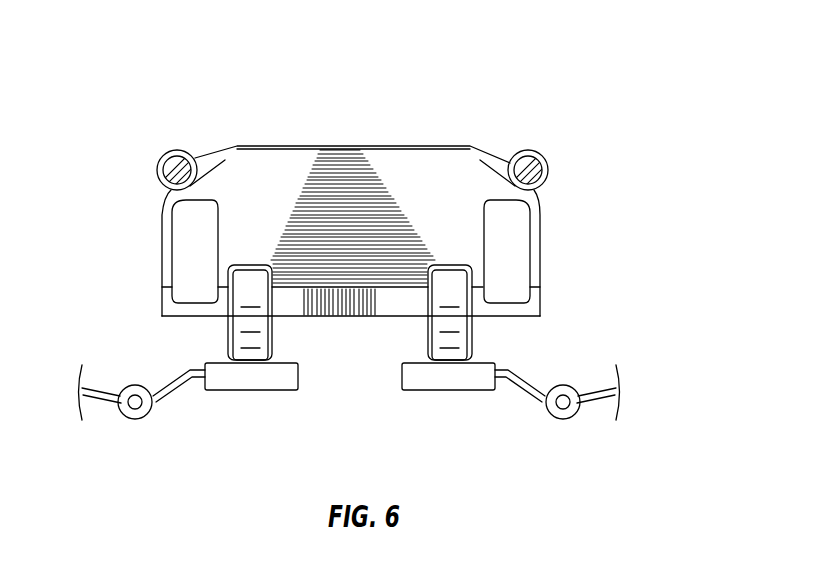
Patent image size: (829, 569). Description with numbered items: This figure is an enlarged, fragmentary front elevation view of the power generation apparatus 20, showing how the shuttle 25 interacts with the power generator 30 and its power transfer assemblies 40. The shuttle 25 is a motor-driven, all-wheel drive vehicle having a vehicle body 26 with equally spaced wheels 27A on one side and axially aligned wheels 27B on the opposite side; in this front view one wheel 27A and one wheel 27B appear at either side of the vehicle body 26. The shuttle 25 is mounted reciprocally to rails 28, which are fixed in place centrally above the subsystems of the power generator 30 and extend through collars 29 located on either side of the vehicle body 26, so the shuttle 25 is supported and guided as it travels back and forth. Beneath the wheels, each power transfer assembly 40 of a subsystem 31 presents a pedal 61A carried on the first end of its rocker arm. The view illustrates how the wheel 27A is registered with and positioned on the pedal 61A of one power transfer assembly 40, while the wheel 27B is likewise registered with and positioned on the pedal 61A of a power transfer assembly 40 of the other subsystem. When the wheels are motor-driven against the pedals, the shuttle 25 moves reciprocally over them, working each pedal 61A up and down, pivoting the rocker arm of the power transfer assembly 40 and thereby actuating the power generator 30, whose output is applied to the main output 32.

The power generation apparatus 20 is at (660, 190).
The shuttle 25 is at (430, 146).
The vehicle body 26 is at (372, 165).
The wheels 27A is at (455, 338).
The wheels 27B is at (245, 333).
The rails 28 is at (182, 164).
The collars 29 is at (177, 152).
The power generator 30 is at (411, 340).
The subsystem 31 is at (643, 338).
The main output 32 is at (152, 419).
The power transfer assembly 40 is at (105, 402).
The pedal 61A is at (255, 380).